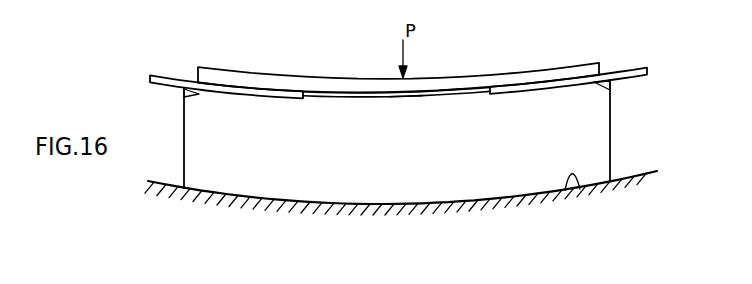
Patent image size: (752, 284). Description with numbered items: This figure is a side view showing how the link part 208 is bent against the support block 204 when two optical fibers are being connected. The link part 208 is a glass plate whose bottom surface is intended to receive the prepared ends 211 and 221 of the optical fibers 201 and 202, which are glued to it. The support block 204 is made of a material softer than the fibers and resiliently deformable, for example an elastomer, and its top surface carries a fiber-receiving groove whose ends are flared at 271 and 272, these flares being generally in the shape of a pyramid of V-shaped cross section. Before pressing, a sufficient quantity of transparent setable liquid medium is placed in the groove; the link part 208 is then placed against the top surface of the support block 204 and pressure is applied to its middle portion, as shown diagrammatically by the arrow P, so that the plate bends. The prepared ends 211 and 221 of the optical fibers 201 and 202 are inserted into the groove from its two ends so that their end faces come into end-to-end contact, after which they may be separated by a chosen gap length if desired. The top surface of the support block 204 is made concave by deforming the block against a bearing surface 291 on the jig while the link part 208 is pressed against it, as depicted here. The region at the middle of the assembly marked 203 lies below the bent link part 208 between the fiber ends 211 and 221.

The optical fiber 201 is at (162, 85).
The optical fiber 202 is at (637, 72).
The intermediate layer 203 is at (403, 98).
The support block 204 is at (287, 150).
The link part 208 is at (249, 73).
The prepared end of optical fiber 211 is at (333, 93).
The prepared end of optical fiber 221 is at (452, 93).
The flared end of groove 271 is at (181, 93).
The flared end of groove 272 is at (613, 88).
The bearing surface 291 is at (572, 176).